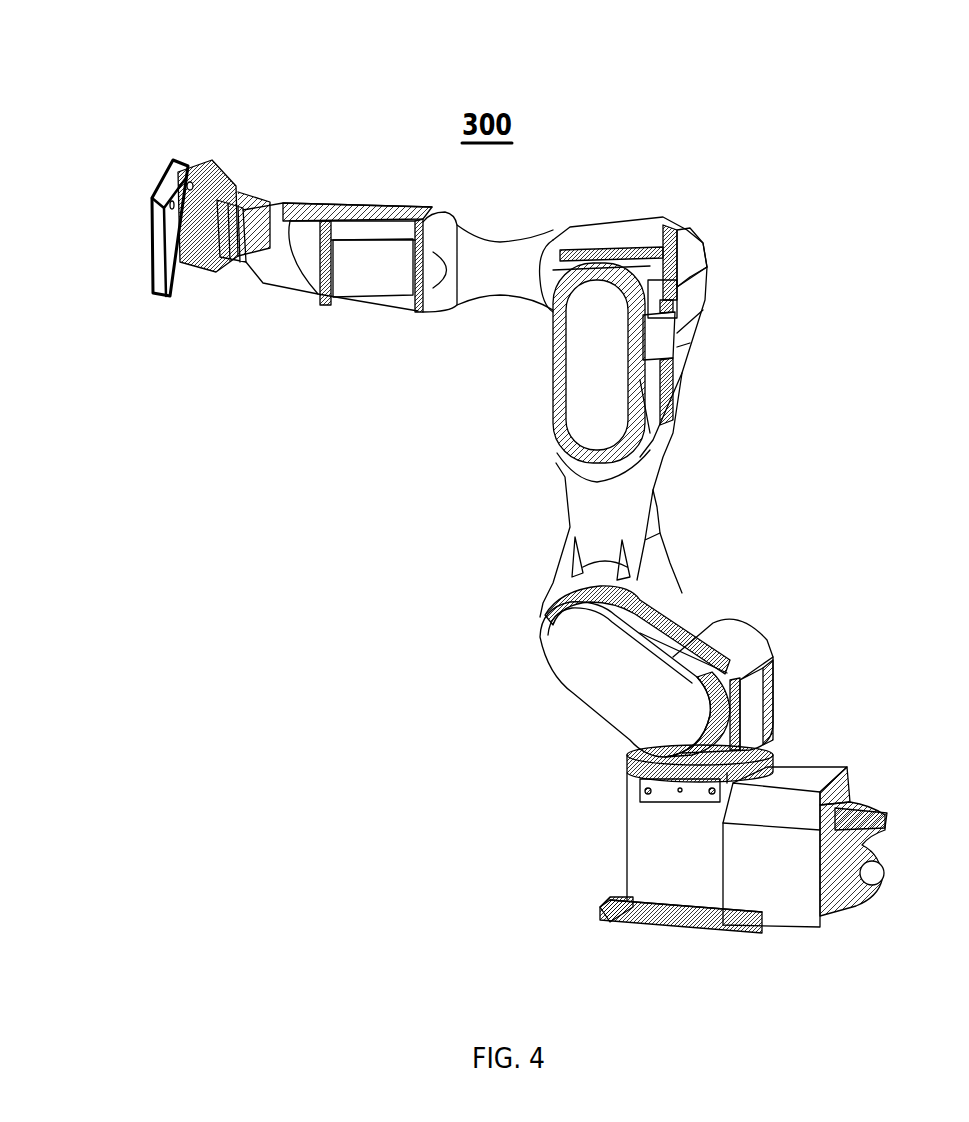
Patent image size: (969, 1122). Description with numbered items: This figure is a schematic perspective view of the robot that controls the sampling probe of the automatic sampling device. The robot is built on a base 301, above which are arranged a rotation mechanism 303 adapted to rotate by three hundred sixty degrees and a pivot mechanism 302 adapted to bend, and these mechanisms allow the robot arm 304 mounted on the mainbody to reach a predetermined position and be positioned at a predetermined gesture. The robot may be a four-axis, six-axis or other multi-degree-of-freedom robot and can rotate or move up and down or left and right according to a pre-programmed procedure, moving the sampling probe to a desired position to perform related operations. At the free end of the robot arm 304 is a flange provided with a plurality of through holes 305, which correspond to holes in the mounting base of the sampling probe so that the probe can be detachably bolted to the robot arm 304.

The base 301 is at (665, 842).
The pivot mechanism 302 is at (565, 640).
The rotation mechanism 303 is at (363, 272).
The robot arm 304 is at (157, 252).
The through holes 305 is at (184, 187).